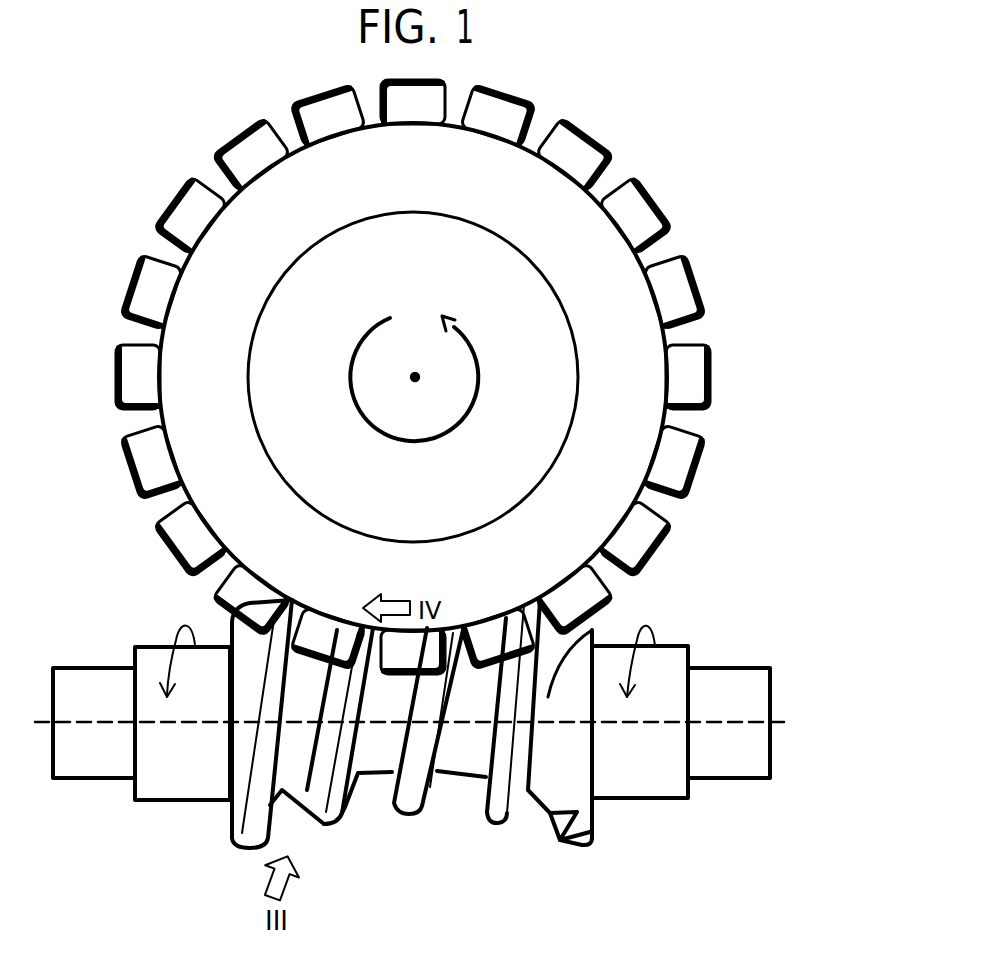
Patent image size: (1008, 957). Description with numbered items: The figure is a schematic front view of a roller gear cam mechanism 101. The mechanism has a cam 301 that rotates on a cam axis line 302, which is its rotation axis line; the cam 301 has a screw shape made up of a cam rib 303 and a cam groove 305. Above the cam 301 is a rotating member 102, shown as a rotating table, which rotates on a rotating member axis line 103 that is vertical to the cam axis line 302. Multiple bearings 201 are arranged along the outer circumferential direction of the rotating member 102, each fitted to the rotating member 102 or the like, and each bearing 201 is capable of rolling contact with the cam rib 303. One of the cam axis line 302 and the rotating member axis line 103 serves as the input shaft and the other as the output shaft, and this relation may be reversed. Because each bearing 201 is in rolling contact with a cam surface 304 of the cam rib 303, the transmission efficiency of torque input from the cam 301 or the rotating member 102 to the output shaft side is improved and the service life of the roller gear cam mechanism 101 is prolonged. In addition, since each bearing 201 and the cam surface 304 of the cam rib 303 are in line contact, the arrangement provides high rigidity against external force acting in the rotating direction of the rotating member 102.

The roller gear cam mechanism 101 is at (622, 148).
The rotating member 102 is at (225, 288).
The rotating member axis line 103 is at (412, 376).
The bearing 201 is at (680, 380).
The cam 301 is at (448, 756).
The cam axis line 302 is at (777, 722).
The cam rib 303 is at (583, 838).
The cam surface 304 is at (328, 700).
The cam groove 305 is at (378, 735).